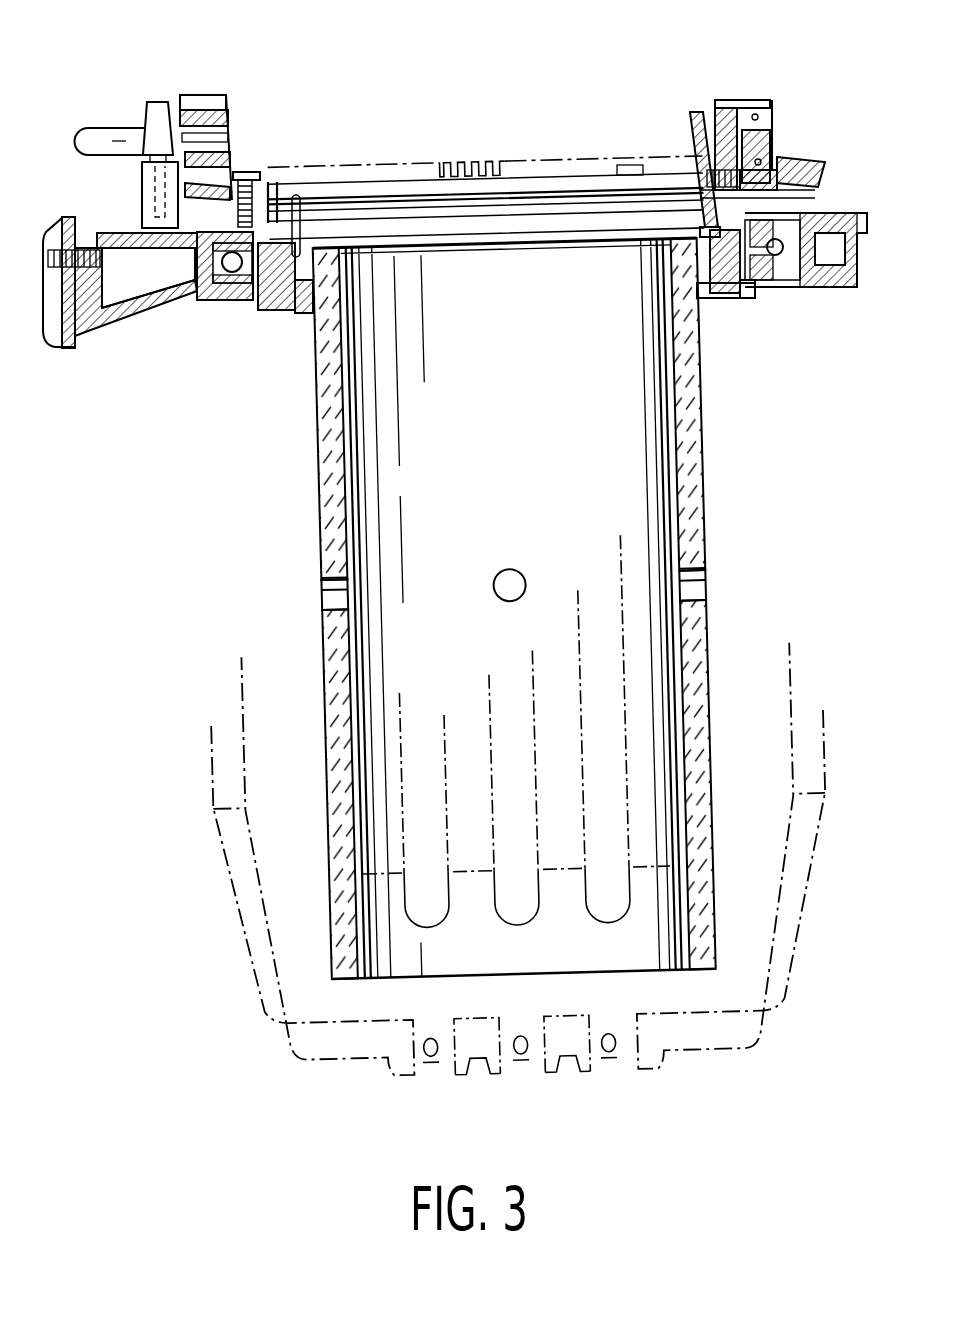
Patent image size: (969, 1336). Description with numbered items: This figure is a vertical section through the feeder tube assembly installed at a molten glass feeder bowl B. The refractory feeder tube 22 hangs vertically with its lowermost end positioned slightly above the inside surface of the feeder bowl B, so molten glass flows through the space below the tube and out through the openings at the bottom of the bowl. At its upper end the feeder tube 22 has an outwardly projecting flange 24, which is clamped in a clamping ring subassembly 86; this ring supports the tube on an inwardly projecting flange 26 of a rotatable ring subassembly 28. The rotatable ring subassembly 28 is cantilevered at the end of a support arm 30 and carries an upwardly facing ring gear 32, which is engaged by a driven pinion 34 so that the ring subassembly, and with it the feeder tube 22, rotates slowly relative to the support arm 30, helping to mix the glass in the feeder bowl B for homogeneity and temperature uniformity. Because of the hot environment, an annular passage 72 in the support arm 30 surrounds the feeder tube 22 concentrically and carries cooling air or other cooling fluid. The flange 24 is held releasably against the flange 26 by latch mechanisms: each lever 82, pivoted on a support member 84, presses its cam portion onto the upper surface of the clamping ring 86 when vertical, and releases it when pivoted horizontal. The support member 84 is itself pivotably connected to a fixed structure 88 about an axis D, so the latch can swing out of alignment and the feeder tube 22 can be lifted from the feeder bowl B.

The feeder tube 22 is at (716, 456).
The flange 24 is at (707, 297).
The inwardly projecting flange 26 is at (297, 310).
The rotatable ring subassembly 28 is at (258, 178).
The support arm 30 is at (120, 322).
The ring gear 32 is at (450, 162).
The driven pinion 34 is at (210, 93).
The annular passage 72 is at (832, 240).
The lever 82 is at (700, 142).
The support member 84 is at (722, 100).
The clamping ring subassembly 86 is at (753, 297).
The fixed structure 88 is at (775, 148).
The feeder bowl B is at (807, 920).
The axis D is at (772, 100).